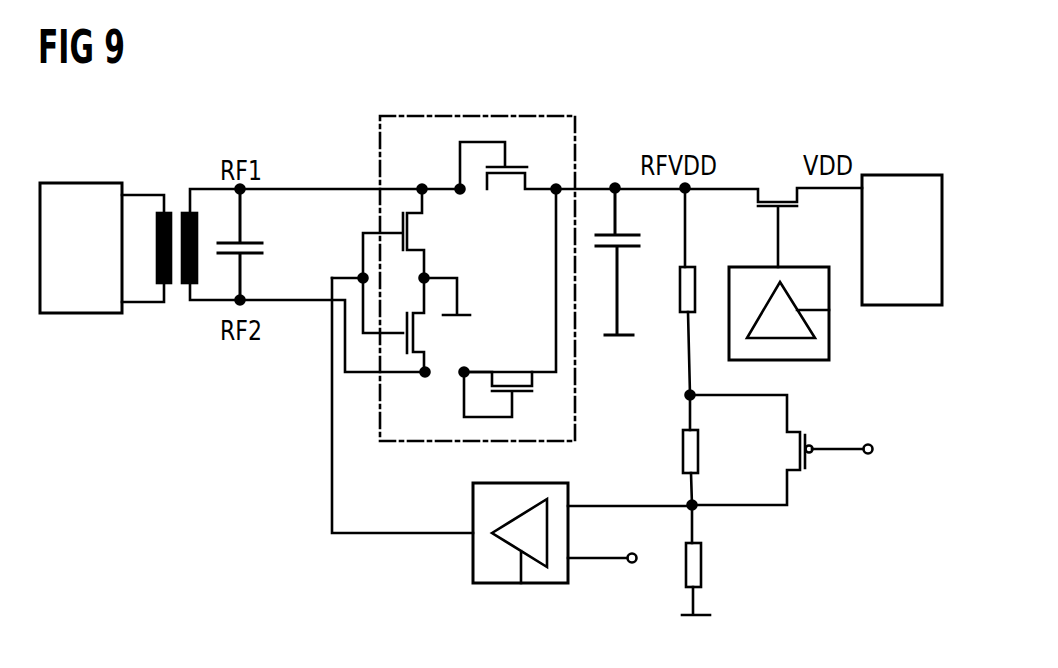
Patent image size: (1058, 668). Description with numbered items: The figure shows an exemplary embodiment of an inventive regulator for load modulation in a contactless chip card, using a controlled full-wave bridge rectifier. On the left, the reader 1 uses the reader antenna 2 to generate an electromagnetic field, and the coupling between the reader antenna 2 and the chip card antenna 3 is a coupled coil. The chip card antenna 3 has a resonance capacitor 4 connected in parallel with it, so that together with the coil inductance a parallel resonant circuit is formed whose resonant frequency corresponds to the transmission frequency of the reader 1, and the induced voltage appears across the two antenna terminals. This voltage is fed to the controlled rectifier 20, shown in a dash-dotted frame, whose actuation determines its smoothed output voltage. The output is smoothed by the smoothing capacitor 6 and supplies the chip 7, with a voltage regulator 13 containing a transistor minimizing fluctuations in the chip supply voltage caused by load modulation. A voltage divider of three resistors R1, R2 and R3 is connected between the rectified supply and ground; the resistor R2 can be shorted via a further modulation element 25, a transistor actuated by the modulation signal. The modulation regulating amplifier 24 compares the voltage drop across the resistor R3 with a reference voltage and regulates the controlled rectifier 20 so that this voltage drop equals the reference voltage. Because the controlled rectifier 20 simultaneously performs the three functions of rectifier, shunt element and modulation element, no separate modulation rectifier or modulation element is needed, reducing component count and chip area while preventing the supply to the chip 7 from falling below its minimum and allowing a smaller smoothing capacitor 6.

The reader 1 is at (80, 183).
The reader antenna 2 is at (146, 232).
The chip card antenna 3 is at (211, 231).
The resonance capacitor 4 is at (262, 248).
The controlled rectifier 20 is at (470, 117).
The smoothing capacitor 6 is at (630, 248).
The resistor R1 is at (687, 263).
The chip 7 is at (905, 175).
The voltage regulator 13 is at (829, 327).
The resistor R2 is at (700, 458).
The modulation element 25 is at (810, 462).
The resistor R3 is at (702, 562).
The modulation regulating amplifier 24 is at (513, 583).